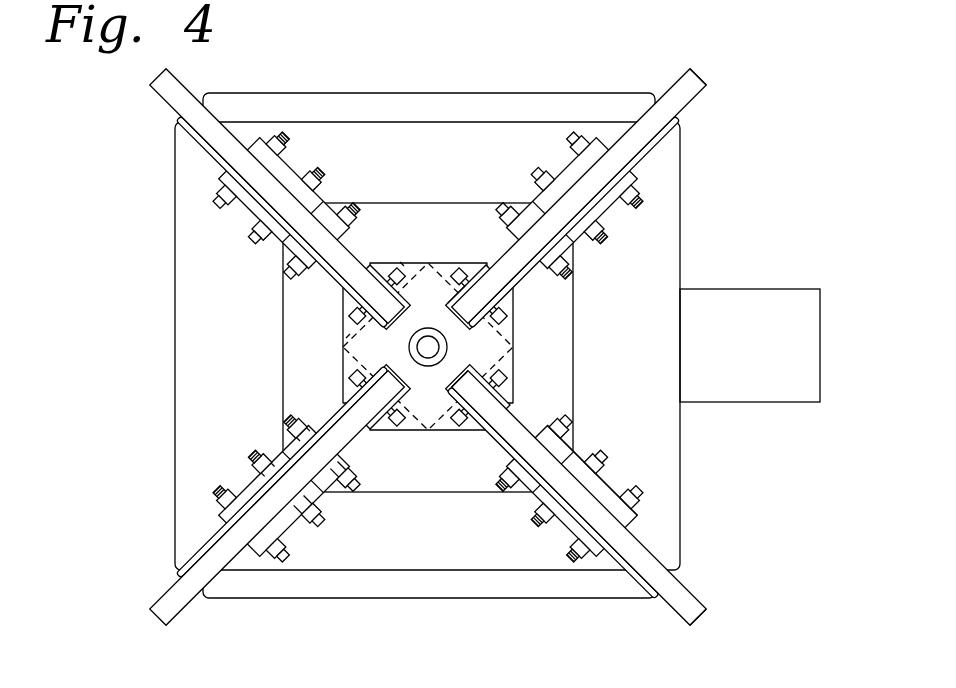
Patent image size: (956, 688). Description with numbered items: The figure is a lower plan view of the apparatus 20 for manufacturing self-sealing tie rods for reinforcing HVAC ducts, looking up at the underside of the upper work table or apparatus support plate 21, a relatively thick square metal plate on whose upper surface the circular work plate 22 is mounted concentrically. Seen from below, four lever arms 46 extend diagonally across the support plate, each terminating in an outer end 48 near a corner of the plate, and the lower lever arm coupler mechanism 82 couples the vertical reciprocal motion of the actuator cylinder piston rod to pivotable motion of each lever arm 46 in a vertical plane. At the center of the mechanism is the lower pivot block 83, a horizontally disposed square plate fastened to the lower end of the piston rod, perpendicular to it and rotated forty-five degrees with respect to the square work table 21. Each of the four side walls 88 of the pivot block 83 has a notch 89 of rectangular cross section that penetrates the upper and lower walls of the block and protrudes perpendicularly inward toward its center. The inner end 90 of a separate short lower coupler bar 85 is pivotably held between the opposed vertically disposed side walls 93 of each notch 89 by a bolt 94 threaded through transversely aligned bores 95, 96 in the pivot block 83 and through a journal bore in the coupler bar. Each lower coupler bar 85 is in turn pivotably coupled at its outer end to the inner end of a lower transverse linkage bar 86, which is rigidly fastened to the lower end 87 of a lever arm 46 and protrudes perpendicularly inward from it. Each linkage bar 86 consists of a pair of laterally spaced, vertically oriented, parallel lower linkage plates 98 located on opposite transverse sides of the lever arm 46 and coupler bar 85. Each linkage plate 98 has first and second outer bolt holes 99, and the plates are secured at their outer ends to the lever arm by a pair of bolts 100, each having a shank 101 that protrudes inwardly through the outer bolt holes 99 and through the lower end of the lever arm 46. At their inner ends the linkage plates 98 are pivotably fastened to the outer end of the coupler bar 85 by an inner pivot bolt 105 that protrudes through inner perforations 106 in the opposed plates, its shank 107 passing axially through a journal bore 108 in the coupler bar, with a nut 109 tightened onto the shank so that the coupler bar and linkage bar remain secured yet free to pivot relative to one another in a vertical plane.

The apparatus 20 is at (773, 137).
The upper work table or apparatus support plate 21 is at (683, 180).
The circular work plate 22 is at (673, 247).
The lever arm 46 is at (188, 90).
The brace bar end 48 is at (673, 607).
The lower lever arm coupler mechanism 82 is at (281, 320).
The lower pivot block 83 is at (517, 355).
The lower coupler bar 85 is at (500, 430).
The lower transverse linkage bar 86 is at (608, 477).
The lower end of lever arm 87 is at (605, 523).
The side wall 88 is at (345, 310).
The notch 89 is at (447, 318).
The inner end of lower coupler bar 90 is at (500, 295).
The side wall of notch 93 is at (346, 338).
The bolt 94 is at (400, 262).
The bore 95 is at (510, 300).
The bore 96 is at (546, 335).
The lower linkage plate 98 is at (627, 495).
The outer bolt hole 99 is at (484, 475).
The bolt 100 is at (288, 540).
The shank 101 is at (253, 453).
The inner pivot bolt 105 is at (310, 505).
The inner perforation 106 is at (339, 532).
The shank of pivot bolt 107 is at (280, 415).
The journal bore 108 is at (345, 470).
The nut 109 is at (290, 408).